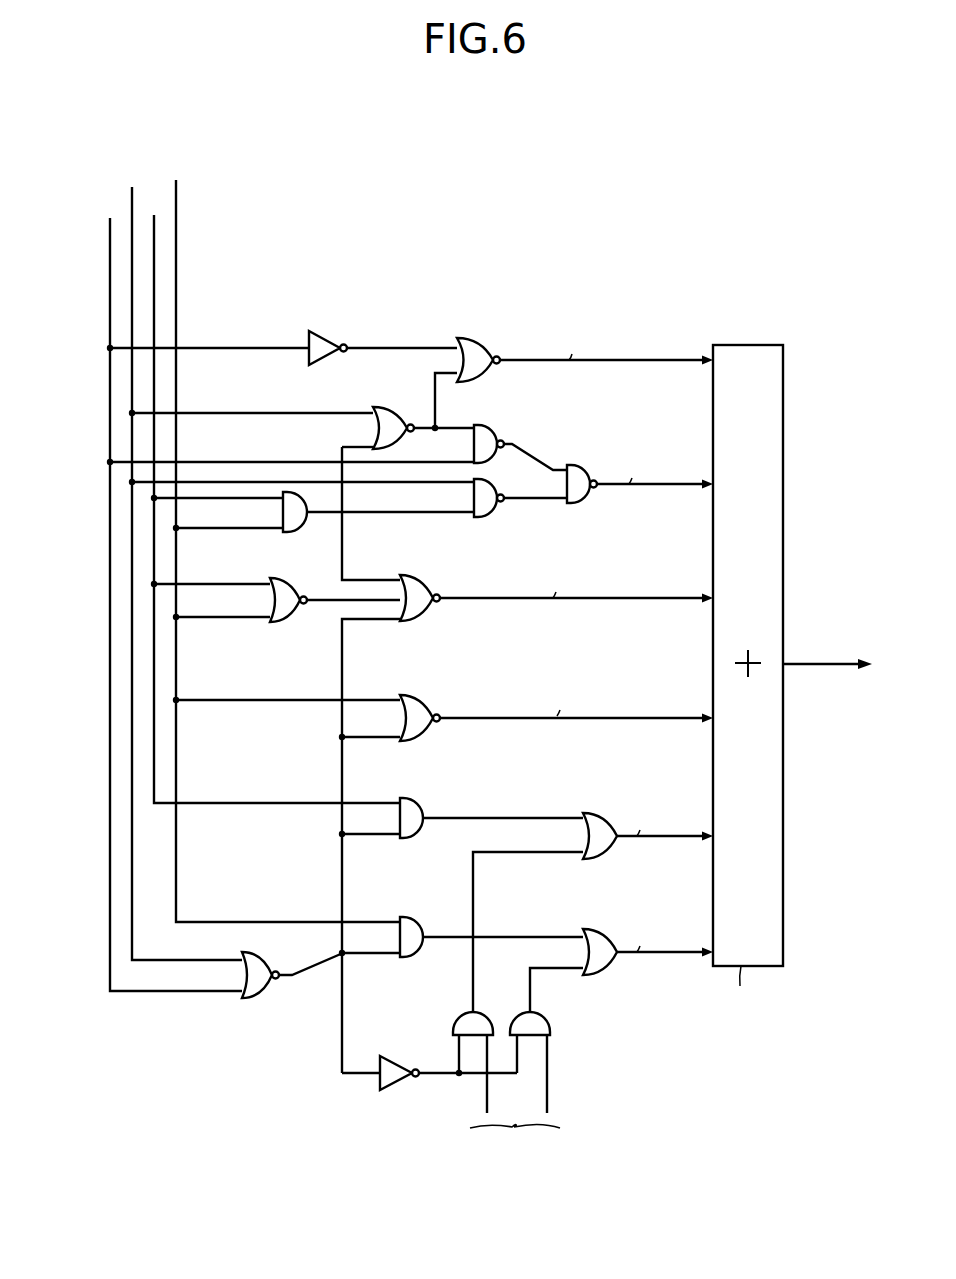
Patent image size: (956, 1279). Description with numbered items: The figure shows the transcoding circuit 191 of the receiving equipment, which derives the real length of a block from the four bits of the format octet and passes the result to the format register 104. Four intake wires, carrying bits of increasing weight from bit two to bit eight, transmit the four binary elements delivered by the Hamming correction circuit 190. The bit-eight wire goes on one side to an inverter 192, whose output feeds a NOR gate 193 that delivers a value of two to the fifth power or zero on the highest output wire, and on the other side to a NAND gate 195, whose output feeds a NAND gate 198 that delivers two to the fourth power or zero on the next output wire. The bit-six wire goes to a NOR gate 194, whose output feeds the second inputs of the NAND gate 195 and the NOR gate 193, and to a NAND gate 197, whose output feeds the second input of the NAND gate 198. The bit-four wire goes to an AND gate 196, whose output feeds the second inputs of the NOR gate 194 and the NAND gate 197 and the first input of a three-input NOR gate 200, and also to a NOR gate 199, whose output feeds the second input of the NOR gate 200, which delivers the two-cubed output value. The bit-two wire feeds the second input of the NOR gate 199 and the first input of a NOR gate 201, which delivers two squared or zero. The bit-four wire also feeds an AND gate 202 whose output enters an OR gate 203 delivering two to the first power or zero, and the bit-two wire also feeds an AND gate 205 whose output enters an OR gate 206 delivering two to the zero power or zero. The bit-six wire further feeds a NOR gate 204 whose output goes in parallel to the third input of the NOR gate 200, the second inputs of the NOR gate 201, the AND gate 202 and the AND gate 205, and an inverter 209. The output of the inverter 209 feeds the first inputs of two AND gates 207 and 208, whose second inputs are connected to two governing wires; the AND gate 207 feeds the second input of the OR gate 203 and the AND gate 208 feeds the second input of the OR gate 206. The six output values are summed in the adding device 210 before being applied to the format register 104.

The format register 104 is at (834, 663).
The Hamming correction circuit 190 is at (110, 218).
The transcoding circuit 191 is at (484, 595).
The inverter 192 is at (324, 337).
The NOR gate 193 is at (471, 339).
The NOR gate 194 is at (384, 407).
The NAND gate 195 is at (495, 418).
The AND gate 196 is at (300, 530).
The NAND gate 197 is at (488, 516).
The NAND gate 198 is at (574, 464).
The NOR gate 199 is at (288, 618).
The three input NOR gate 200 is at (422, 597).
The NOR gate 201 is at (424, 699).
The AND gate 202 is at (422, 792).
The OR gate 203 is at (604, 812).
The NOR gate 204 is at (260, 996).
The AND gate 205 is at (412, 908).
The OR gate 206 is at (604, 935).
The AND gate 207 is at (467, 1012).
The AND gate 208 is at (540, 1015).
The inverter 209 is at (388, 1057).
The adding device 210 is at (744, 354).